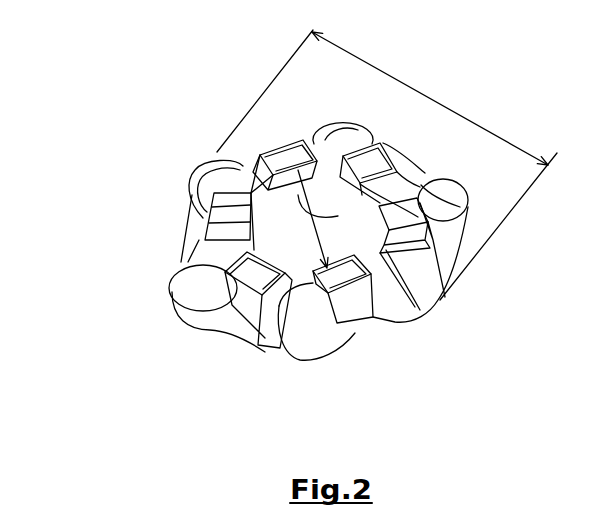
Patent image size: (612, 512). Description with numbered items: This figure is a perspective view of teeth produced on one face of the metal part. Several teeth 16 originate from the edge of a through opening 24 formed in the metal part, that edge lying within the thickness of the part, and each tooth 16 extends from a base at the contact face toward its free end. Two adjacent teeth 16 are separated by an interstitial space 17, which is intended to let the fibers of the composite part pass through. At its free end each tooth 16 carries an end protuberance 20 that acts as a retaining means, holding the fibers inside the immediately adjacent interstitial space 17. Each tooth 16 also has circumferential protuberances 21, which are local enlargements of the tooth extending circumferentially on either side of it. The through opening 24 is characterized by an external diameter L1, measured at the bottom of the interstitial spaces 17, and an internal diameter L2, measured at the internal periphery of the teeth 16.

The tooth 16 is at (222, 223).
The interstitial space 17 is at (212, 262).
The end protuberance 20 is at (330, 82).
The circumferential protuberance 21 is at (278, 357).
The through opening 24 is at (266, 207).
The external diameter L1 is at (423, 95).
The internal diameter L2 is at (331, 219).